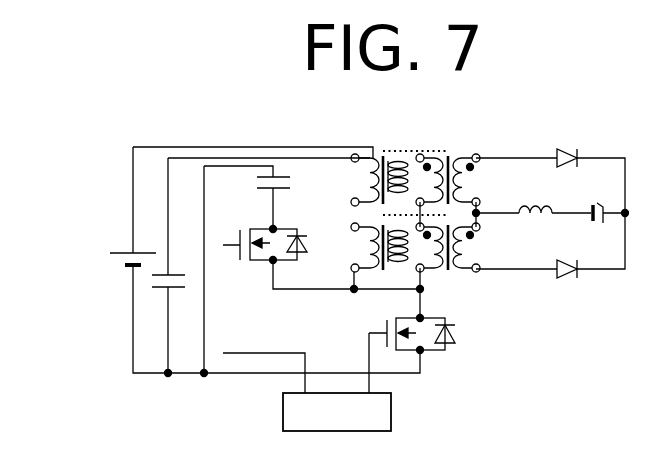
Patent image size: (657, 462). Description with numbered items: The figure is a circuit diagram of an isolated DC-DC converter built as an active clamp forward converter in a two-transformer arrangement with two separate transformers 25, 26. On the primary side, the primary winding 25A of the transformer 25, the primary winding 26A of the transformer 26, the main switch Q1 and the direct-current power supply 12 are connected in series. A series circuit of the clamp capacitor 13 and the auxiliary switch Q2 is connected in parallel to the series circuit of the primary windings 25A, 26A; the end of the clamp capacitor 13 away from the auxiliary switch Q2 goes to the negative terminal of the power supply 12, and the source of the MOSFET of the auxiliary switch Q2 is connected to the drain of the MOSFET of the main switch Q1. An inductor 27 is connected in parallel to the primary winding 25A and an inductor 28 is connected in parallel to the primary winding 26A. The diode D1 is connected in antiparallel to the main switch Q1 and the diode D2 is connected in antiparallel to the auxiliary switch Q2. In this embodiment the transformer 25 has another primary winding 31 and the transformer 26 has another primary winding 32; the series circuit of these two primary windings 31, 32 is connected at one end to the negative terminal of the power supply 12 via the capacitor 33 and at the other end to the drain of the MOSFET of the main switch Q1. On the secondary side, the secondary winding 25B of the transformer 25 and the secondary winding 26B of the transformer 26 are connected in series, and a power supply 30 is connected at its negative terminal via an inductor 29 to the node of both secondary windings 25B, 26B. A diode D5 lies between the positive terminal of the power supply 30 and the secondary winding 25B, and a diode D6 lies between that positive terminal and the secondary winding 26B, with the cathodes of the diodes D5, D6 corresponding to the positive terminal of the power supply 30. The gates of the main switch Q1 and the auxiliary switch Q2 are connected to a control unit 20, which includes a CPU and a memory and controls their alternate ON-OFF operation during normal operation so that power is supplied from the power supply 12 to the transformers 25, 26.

The direct-current power supply 12 is at (121, 236).
The clamp capacitor 13 is at (288, 188).
The control unit 20 is at (393, 412).
The transformer 25 is at (452, 131).
The primary winding 25A is at (431, 156).
The secondary winding 25B is at (463, 158).
The transformer 26 is at (455, 283).
The primary winding 26A is at (426, 271).
The secondary winding 26B is at (463, 271).
The inductor 27 is at (402, 158).
The inductor 28 is at (389, 271).
The inductor 29 is at (538, 207).
The power supply 30 is at (600, 204).
The primary winding 31 is at (372, 148).
The primary winding 32 is at (374, 290).
The capacitor 33 is at (176, 275).
The diode D1 is at (457, 333).
The diode D2 is at (309, 240).
The diode D5 is at (567, 151).
The diode D6 is at (567, 274).
The main switch Q1 is at (416, 351).
The auxiliary switch Q2 is at (266, 262).